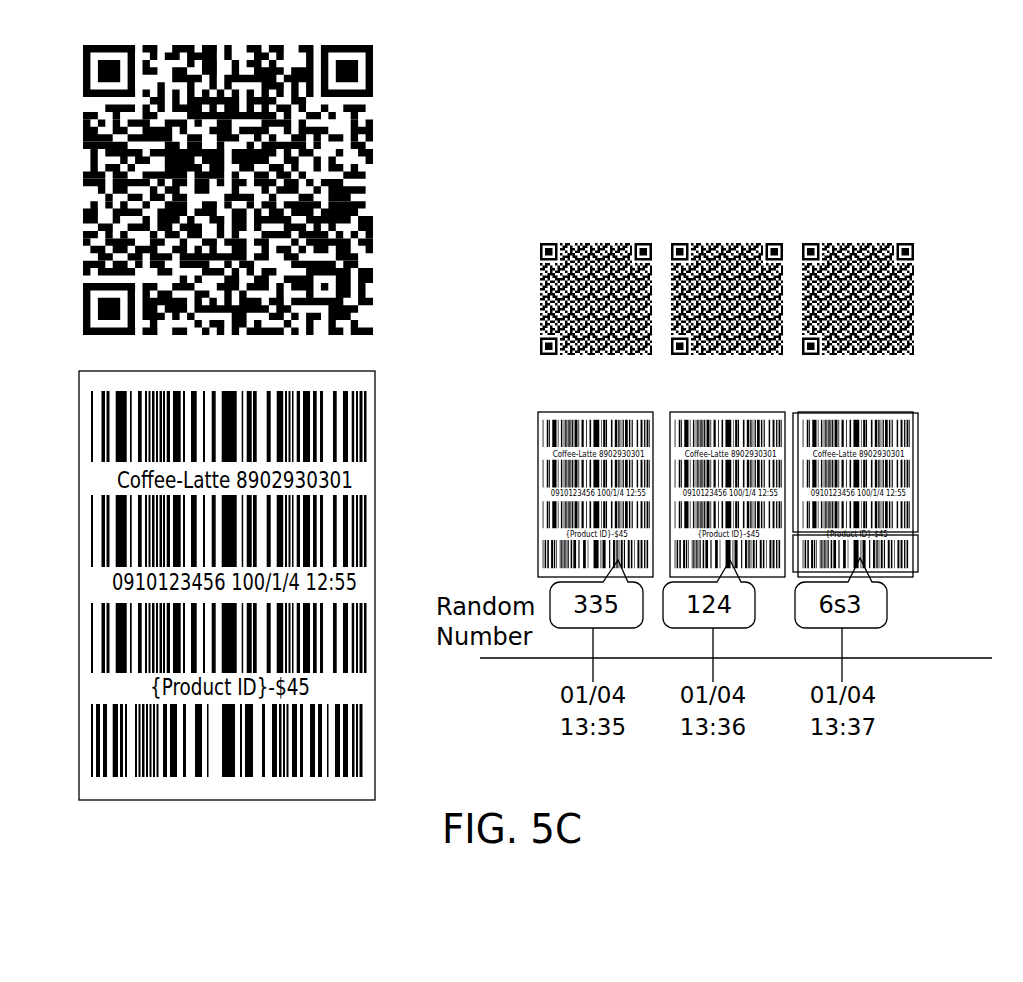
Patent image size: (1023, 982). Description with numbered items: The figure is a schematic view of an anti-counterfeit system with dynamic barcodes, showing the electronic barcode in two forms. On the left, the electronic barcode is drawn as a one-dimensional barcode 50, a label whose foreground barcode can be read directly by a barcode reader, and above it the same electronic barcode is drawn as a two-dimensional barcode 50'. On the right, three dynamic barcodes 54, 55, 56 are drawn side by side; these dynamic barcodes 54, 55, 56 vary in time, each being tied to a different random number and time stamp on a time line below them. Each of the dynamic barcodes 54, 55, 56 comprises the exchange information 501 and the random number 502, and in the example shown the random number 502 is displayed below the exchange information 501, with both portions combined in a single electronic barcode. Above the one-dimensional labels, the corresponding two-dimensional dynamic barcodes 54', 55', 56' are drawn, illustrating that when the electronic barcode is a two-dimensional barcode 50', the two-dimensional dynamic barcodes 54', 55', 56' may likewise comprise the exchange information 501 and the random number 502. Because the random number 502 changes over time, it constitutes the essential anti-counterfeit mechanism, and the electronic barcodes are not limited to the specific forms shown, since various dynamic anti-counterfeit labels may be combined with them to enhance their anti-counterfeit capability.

The two-dimensional barcode 50' is at (190, 190).
The one-dimensional barcode 50 is at (191, 585).
The two-dimensional dynamic barcode 54' is at (599, 275).
The two-dimensional dynamic barcode 55' is at (741, 275).
The two-dimensional dynamic barcode 56' is at (868, 275).
The dynamic barcode 54 is at (595, 471).
The dynamic barcode 55 is at (727, 471).
The dynamic barcode 56 is at (855, 471).
The exchange information 501 is at (918, 494).
The random number 502 is at (918, 555).